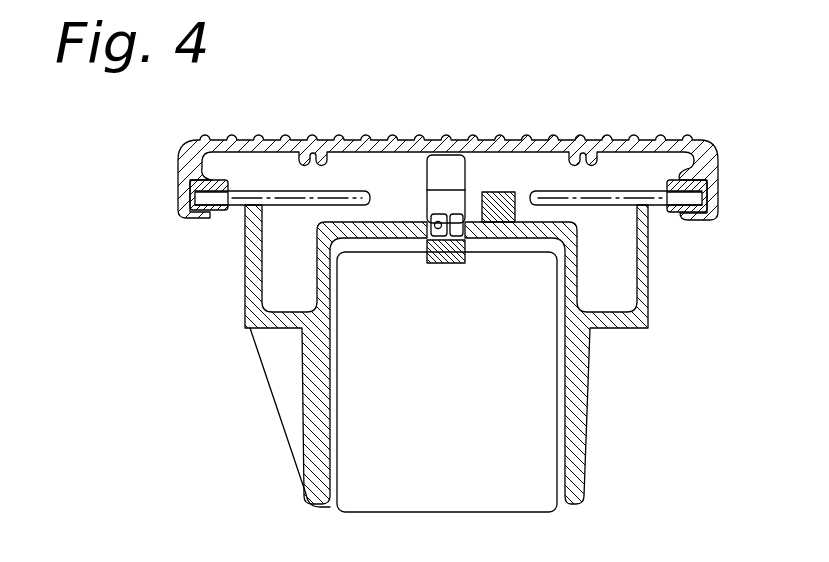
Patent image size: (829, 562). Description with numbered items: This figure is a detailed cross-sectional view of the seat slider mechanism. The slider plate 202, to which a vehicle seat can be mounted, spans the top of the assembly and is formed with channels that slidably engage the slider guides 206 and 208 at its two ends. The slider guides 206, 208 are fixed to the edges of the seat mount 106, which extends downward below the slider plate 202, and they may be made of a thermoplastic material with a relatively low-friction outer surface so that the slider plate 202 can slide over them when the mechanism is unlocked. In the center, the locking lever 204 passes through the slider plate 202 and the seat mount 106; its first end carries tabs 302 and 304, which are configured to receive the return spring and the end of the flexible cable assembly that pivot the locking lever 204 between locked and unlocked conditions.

The seat mount 106 is at (590, 450).
The slider plate 202 is at (275, 137).
The locking lever 204 is at (452, 163).
The slider guide 206 is at (218, 219).
The slider guide 208 is at (680, 222).
The tab 302 is at (460, 240).
The tab 304 is at (420, 240).